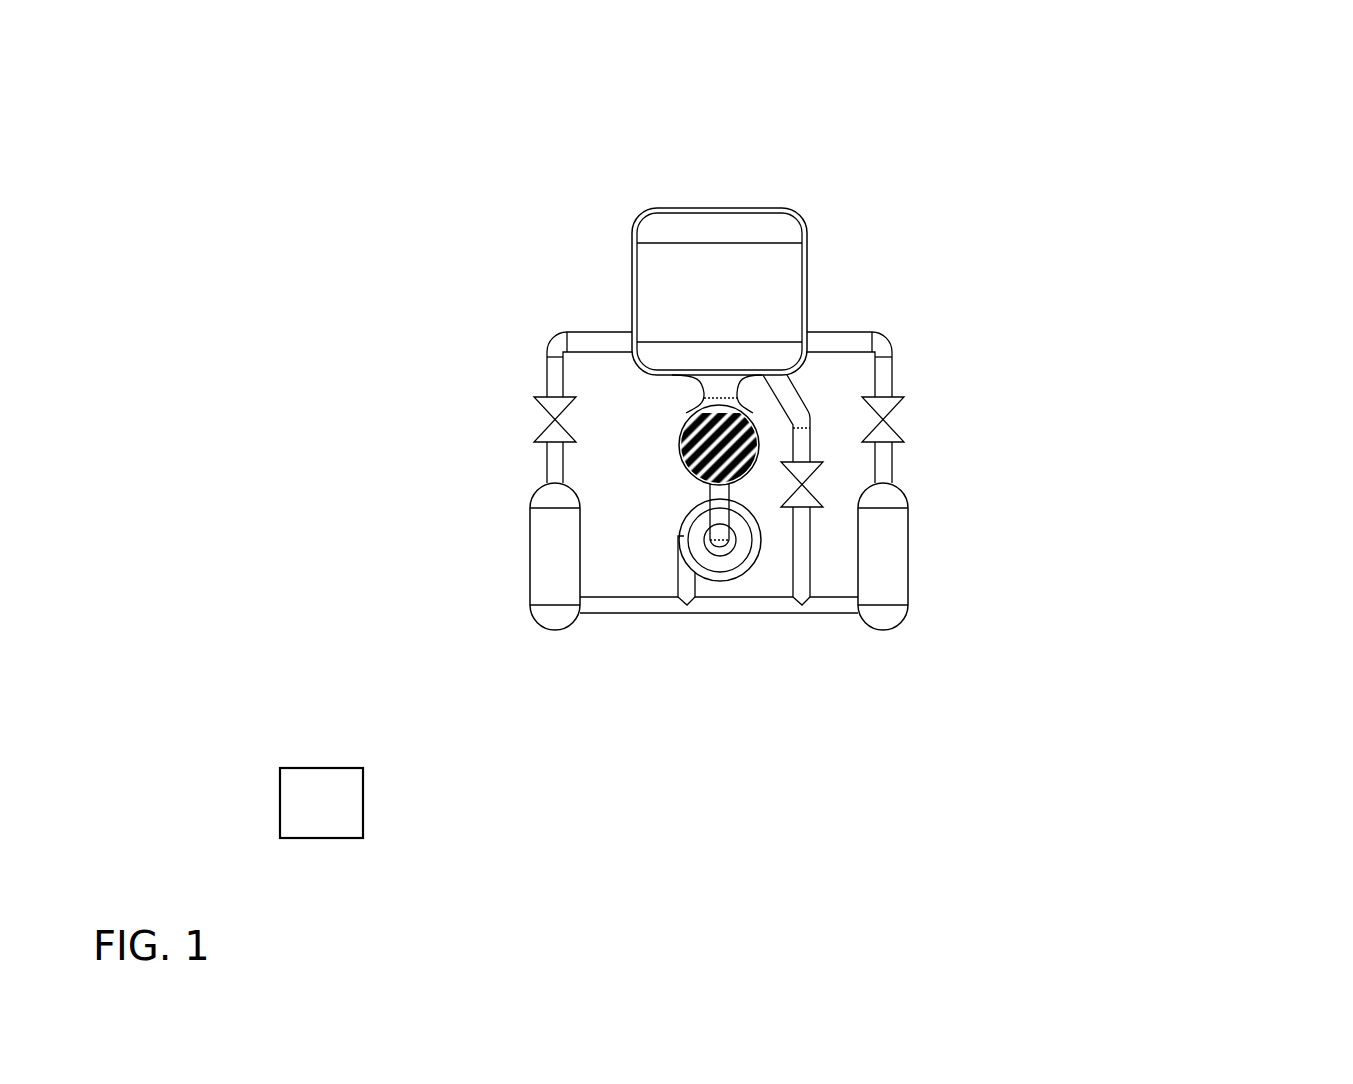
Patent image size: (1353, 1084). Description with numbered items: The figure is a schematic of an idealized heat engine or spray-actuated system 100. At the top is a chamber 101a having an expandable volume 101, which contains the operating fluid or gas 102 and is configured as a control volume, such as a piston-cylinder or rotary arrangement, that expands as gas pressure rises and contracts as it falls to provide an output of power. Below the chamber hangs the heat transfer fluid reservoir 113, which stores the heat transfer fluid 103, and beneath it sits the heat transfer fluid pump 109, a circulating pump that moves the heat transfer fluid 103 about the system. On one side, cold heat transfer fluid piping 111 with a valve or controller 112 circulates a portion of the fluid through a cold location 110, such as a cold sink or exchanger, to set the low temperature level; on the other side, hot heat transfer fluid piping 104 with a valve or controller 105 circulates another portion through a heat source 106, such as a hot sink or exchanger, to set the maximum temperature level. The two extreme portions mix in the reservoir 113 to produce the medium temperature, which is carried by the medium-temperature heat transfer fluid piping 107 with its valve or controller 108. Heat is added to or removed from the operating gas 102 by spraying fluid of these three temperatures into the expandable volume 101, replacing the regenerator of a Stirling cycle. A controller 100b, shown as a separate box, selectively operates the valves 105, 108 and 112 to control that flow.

The spray-actuated system 100 is at (634, 186).
The controller 100b is at (330, 768).
The expandable volume 101 is at (801, 214).
The chamber 101a is at (732, 210).
The operating fluid or gas 102 is at (747, 298).
The heat transfer fluid 103 is at (755, 422).
The hot heat transfer fluid piping 104 is at (884, 378).
The valve or controller 105 is at (884, 408).
The heat source 106 is at (875, 552).
The medium-temperature heat transfer fluid piping 107 is at (820, 605).
The valve or controller 108 is at (802, 497).
The heat transfer fluid pump 109 is at (697, 537).
The cold location 110 is at (548, 545).
The cold heat transfer fluid piping 111 is at (555, 462).
The valve or controller 112 is at (553, 410).
The heat transfer fluid reservoir 113 is at (672, 435).